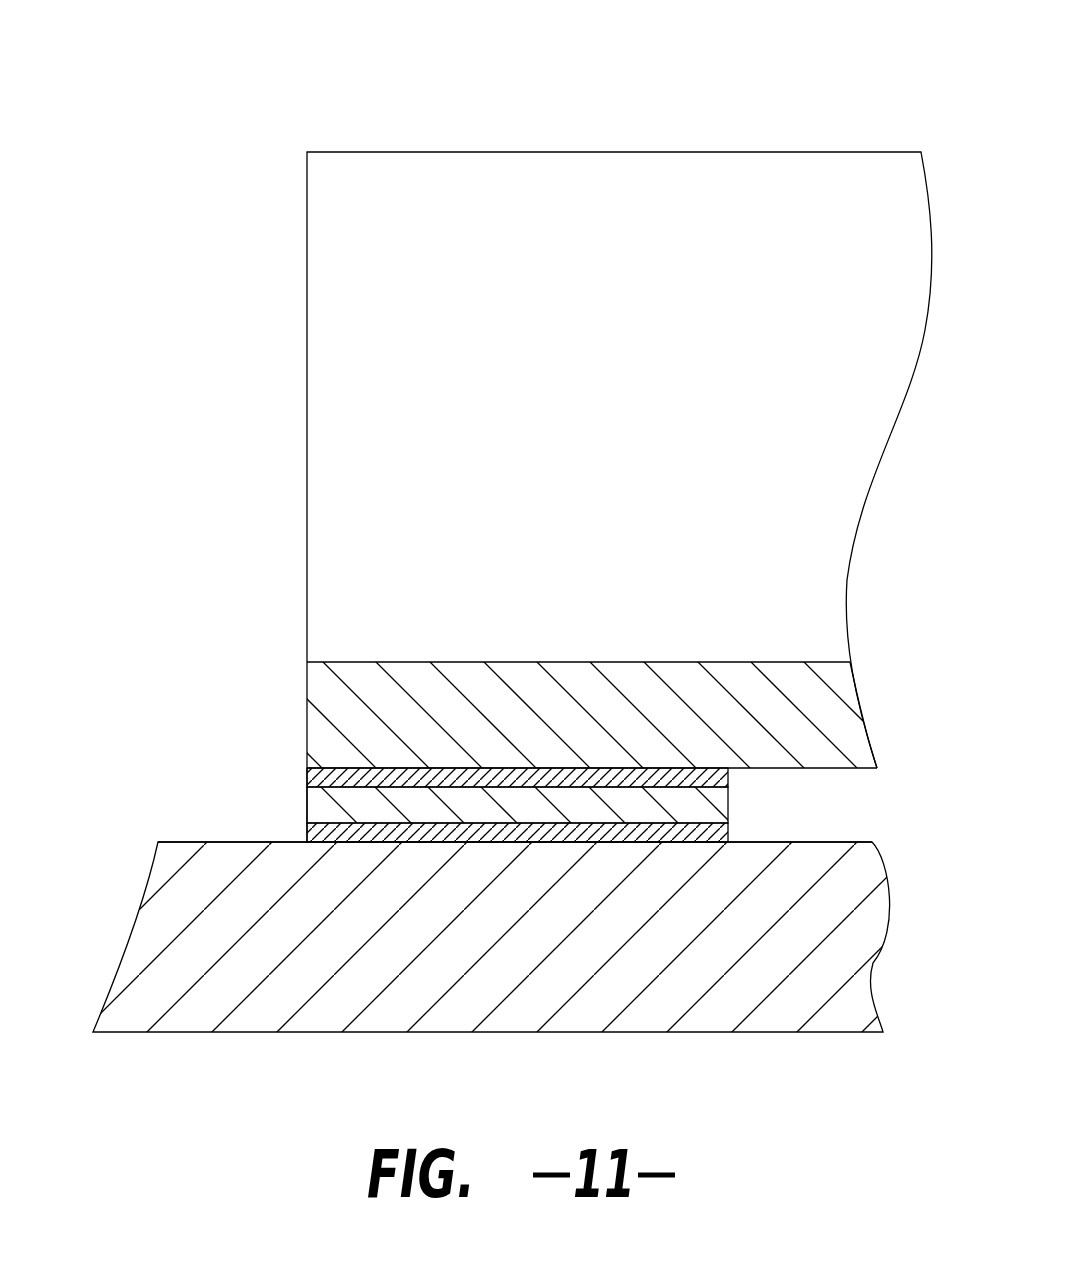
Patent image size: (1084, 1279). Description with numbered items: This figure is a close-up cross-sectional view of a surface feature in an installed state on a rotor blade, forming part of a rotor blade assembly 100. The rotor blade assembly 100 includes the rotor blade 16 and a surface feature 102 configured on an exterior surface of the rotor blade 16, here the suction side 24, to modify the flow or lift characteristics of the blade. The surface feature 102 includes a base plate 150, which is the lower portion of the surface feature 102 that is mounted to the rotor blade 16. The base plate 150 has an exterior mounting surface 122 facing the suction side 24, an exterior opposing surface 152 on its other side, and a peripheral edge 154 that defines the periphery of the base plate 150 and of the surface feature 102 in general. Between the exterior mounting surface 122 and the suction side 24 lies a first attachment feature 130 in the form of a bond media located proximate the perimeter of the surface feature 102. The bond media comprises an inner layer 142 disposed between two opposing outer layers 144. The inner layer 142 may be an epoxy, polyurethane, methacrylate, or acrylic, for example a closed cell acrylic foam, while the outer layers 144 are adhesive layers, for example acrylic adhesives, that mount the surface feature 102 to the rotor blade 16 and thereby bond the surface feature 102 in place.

The rotor blade assembly 100 is at (203, 112).
The surface feature 102 is at (278, 310).
The rotor blade 16 is at (468, 912).
The suction side 24 is at (183, 842).
The exterior mounting surface 122 is at (863, 770).
The first attachment feature 130 is at (529, 784).
The inner layer 142 is at (307, 803).
The outer layers 144 is at (307, 780).
The base plate 150 is at (586, 723).
The exterior opposing surface 152 is at (563, 662).
The peripheral edge 154 is at (307, 718).